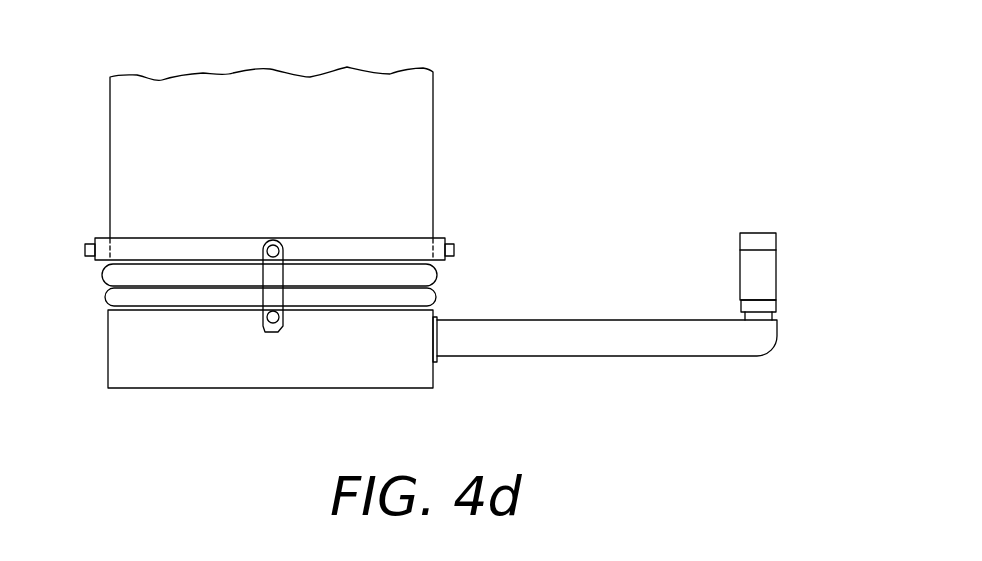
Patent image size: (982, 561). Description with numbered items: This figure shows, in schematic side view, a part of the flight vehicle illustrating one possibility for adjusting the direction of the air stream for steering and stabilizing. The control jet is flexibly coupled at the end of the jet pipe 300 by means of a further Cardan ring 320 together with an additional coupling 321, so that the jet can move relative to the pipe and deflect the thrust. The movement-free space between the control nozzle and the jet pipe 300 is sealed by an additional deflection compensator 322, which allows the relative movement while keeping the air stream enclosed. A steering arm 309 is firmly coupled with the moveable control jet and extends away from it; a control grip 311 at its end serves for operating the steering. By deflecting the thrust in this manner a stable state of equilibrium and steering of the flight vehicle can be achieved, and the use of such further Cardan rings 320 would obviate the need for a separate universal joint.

The jet pipe 300 is at (418, 120).
The Cardan ring 320 is at (453, 234).
The coupling 321 is at (268, 331).
The deflection compensator 322 is at (105, 293).
The steering arm 309 is at (603, 327).
The control grip 311 is at (773, 262).